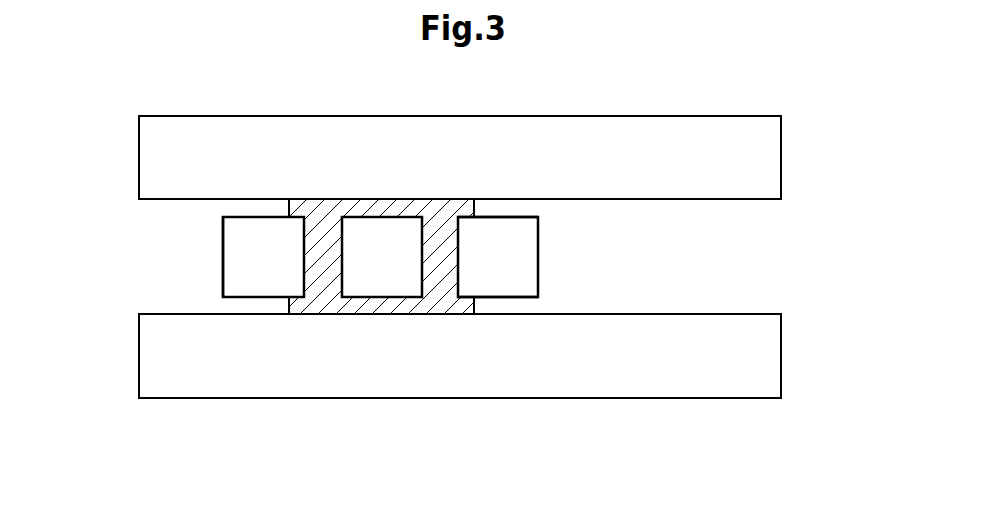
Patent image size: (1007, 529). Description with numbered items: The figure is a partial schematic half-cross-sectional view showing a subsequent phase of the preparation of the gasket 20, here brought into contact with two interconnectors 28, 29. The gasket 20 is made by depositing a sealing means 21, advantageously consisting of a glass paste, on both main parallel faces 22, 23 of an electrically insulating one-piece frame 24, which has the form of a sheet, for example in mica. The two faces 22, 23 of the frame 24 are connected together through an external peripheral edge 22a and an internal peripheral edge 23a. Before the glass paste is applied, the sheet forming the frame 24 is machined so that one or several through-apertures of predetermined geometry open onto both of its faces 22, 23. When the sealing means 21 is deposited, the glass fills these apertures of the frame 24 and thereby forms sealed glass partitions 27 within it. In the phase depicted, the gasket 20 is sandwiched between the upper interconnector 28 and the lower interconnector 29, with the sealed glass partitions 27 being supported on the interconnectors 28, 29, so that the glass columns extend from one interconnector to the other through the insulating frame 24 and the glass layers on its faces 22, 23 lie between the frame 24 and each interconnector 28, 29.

The gasket 20 is at (203, 252).
The sealing means 21 is at (445, 210).
The main face 22 is at (528, 214).
The external peripheral edge 22a is at (221, 235).
The main face 23 is at (527, 302).
The internal peripheral edge 23a is at (539, 260).
The electrically insulating one-piece frame 24 is at (222, 267).
The sealed glass partition 27 is at (325, 275).
The interconnector 28 is at (574, 116).
The interconnector 29 is at (572, 400).